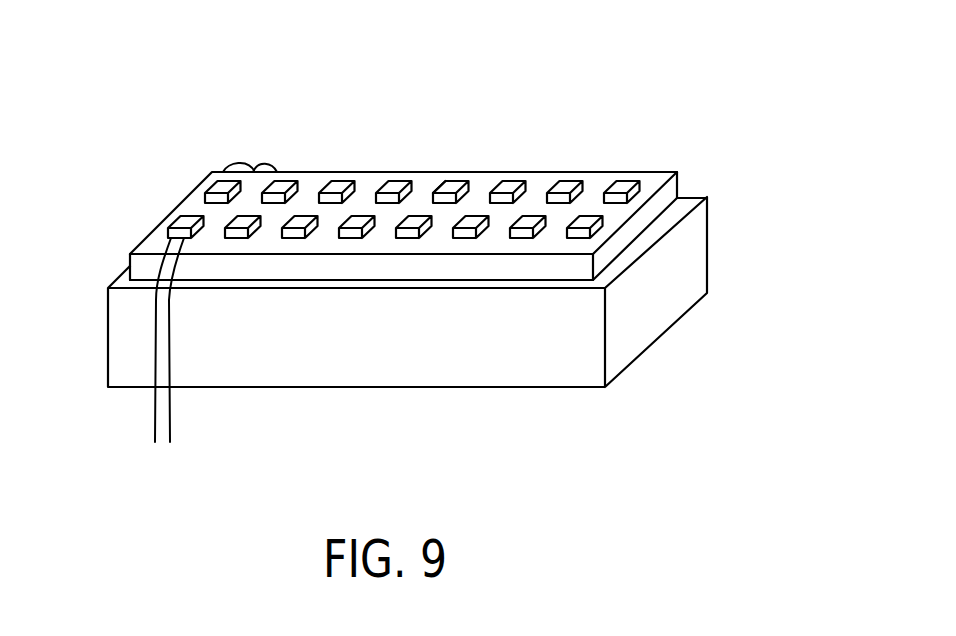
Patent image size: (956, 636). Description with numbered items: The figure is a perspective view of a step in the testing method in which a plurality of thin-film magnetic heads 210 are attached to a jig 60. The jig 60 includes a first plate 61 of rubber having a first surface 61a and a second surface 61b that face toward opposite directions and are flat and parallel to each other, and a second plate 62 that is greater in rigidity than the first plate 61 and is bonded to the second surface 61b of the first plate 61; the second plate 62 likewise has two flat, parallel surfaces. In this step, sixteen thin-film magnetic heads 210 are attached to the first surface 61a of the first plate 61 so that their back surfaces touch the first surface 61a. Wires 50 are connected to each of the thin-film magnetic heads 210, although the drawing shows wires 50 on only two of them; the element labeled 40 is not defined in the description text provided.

The wires 50 is at (262, 158).
The thin-film magnetic head 210 is at (439, 181).
The light emitting element 40 is at (451, 180).
The first surface 61a is at (588, 180).
The second surface 61b is at (538, 288).
The first plate 61 is at (678, 176).
The second plate 62 is at (707, 236).
The jig 60 is at (800, 158).